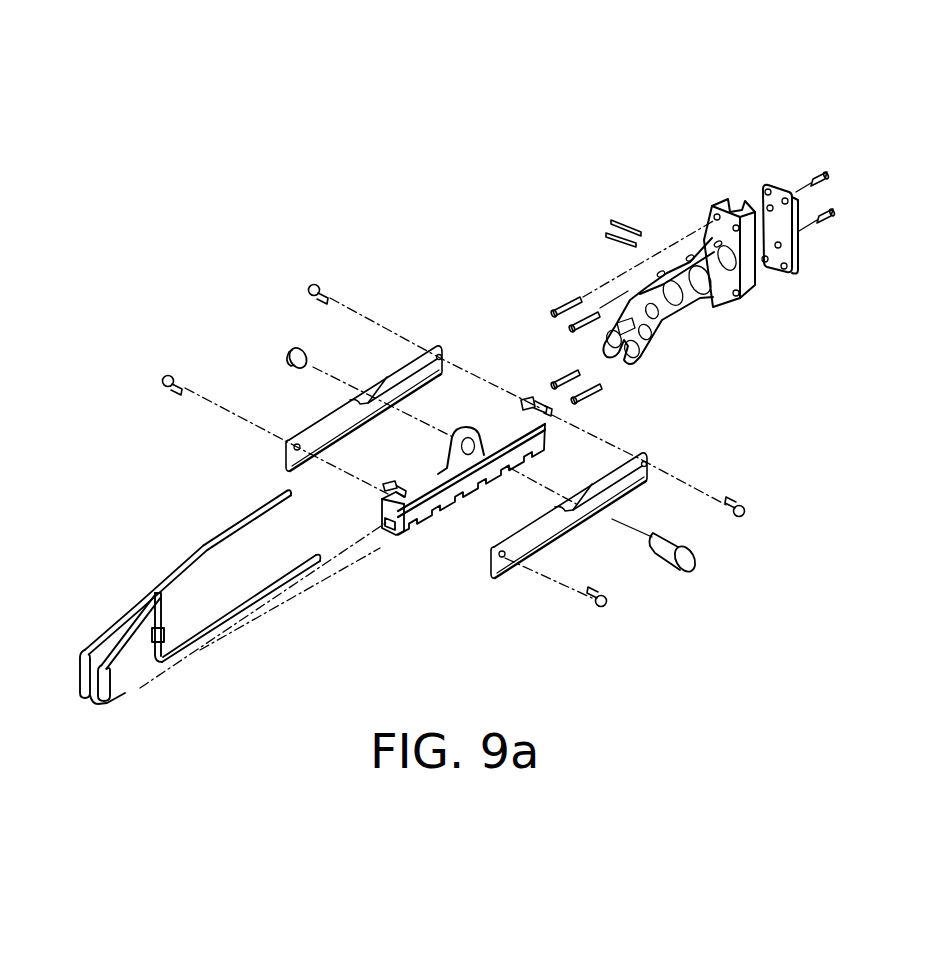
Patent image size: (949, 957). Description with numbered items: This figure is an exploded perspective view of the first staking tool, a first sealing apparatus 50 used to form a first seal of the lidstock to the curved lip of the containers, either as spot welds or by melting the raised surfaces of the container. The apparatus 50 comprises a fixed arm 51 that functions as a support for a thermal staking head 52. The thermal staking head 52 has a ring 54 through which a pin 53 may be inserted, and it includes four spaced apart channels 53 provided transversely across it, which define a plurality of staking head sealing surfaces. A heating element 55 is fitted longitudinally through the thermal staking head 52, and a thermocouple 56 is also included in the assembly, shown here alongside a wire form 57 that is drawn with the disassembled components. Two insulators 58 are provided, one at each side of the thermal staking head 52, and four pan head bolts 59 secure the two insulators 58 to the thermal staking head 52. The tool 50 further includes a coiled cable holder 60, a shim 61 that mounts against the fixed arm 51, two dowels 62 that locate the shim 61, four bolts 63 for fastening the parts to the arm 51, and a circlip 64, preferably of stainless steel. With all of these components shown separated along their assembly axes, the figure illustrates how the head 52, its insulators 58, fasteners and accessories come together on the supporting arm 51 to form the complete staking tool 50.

The first sealing apparatus 50 is at (763, 355).
The fixed arm 51 is at (757, 292).
The thermal staking head 52 is at (540, 398).
The pin 53 is at (483, 507).
The ring 54 is at (690, 563).
The heating element 55 is at (467, 428).
The thermocouple 56 is at (287, 580).
The wire spring 57 is at (260, 507).
The insulator 58 is at (432, 346).
The pan head bolt 59 is at (314, 292).
The coiled cable holder 60 is at (625, 223).
The shim 61 is at (766, 182).
The dowel 62 is at (828, 177).
The bolt 63 is at (570, 297).
The circlip 64 is at (288, 357).